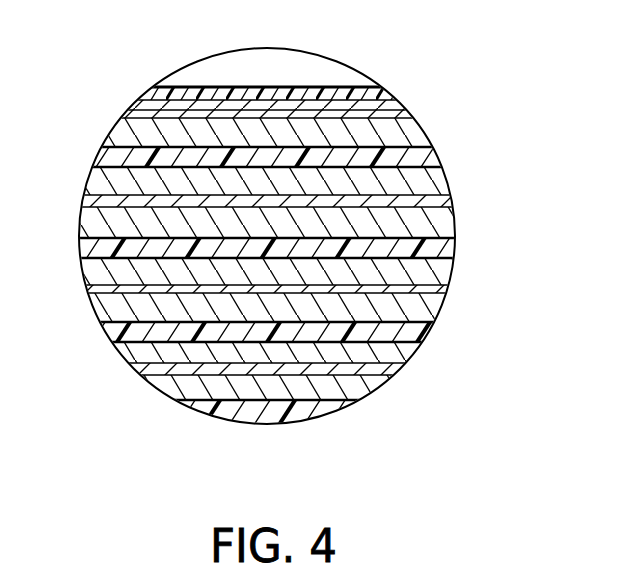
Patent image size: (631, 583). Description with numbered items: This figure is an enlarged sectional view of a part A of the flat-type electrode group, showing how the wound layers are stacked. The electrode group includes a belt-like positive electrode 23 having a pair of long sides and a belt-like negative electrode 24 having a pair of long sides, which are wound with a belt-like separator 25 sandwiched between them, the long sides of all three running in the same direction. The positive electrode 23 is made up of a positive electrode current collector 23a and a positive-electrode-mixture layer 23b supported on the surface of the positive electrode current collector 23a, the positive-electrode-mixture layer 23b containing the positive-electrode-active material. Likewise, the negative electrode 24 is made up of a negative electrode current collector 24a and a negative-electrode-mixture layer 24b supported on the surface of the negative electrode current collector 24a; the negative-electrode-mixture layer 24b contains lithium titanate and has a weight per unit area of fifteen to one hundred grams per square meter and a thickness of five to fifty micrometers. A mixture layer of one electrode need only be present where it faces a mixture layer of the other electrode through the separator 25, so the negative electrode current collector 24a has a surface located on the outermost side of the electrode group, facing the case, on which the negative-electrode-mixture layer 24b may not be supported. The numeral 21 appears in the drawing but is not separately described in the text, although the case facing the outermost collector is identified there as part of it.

The part A is at (178, 80).
The base layer 21 is at (385, 89).
The positive electrode 23 is at (533, 148).
The positive electrode current collector 23a is at (435, 203).
The positive-electrode-mixture layer 23b is at (430, 172).
The negative electrode 24 is at (507, 62).
The negative electrode current collector 24a is at (407, 112).
The negative-electrode-mixture layer 24b is at (407, 130).
The separator 25 is at (105, 160).